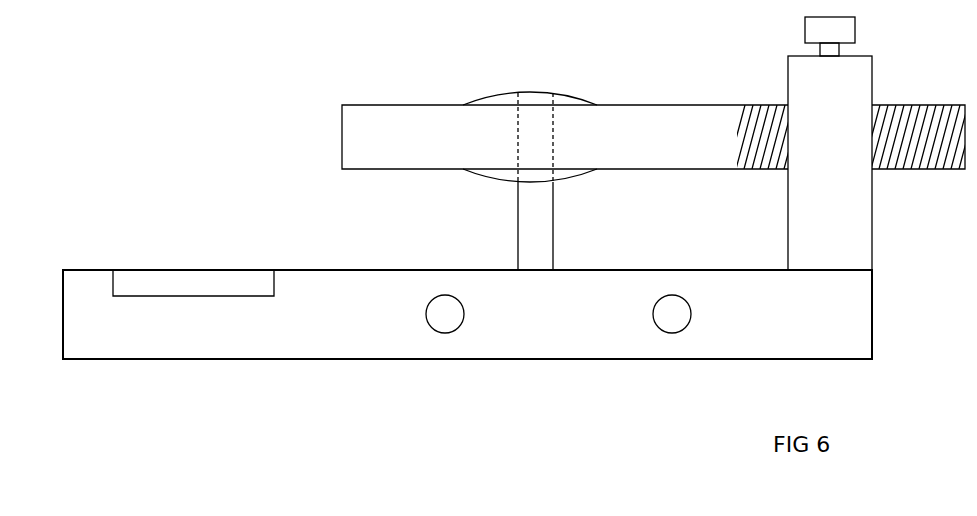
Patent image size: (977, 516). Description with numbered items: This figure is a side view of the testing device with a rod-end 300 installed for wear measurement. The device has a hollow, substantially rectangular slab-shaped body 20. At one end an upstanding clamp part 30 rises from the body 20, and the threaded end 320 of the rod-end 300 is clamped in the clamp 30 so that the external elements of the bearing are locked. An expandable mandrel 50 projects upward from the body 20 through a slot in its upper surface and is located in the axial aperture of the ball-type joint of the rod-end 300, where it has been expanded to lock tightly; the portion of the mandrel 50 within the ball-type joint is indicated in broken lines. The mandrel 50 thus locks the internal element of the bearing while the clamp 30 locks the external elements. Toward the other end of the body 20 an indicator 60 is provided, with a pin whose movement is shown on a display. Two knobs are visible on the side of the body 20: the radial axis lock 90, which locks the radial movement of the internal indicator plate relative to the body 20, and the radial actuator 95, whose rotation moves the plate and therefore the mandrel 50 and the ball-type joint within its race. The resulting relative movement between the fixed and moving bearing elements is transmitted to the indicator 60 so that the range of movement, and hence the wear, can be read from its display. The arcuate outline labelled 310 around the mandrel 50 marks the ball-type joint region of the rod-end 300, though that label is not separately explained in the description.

The body 20 is at (511, 326).
The clamp part 30 is at (802, 170).
The mandrel 50 is at (515, 227).
The indicator 60 is at (194, 266).
The radial axis lock 90 is at (672, 337).
The radial actuator 95 is at (446, 336).
The rod-end 300 is at (336, 137).
The pivot 310 is at (540, 92).
The threaded end 320 is at (899, 175).